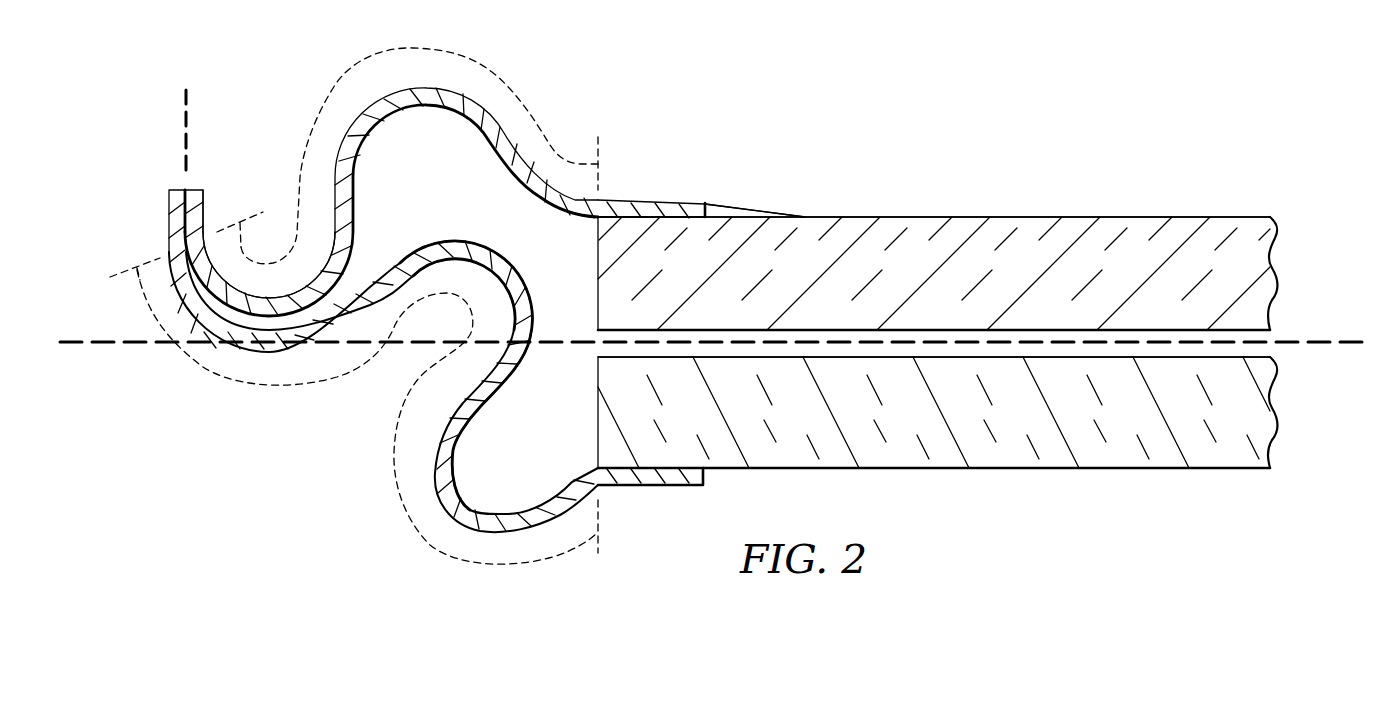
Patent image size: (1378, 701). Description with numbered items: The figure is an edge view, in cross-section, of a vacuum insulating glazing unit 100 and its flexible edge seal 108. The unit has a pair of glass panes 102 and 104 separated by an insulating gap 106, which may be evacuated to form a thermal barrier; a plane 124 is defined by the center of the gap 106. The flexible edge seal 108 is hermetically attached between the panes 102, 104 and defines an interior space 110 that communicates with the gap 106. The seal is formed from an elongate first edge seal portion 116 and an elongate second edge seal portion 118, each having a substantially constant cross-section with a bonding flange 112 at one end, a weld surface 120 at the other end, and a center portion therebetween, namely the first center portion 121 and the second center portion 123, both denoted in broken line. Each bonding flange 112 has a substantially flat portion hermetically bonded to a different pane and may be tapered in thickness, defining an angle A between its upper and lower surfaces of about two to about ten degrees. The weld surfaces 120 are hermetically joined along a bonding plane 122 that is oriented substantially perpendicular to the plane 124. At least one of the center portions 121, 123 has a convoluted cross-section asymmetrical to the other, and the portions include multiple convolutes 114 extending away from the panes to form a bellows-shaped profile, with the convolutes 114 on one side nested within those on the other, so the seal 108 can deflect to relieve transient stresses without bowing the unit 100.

The vacuum insulating glazing unit 100 is at (832, 96).
The glass pane 102 is at (1007, 217).
The glass pane 104 is at (1048, 472).
The insulating gap 106 is at (1055, 343).
The flexible edge seal 108 is at (540, 84).
The interior space 110 is at (449, 189).
The bonding flange 112 is at (647, 200).
The convolute 114 is at (517, 272).
The first edge seal portion 116 is at (432, 88).
The second edge seal portion 118 is at (463, 515).
The weld surface 120 is at (168, 220).
The first center portion 121 is at (323, 107).
The bonding plane 122 is at (185, 123).
The second center portion 123 is at (203, 368).
The plane 124 is at (1328, 342).
The angle A is at (735, 267).